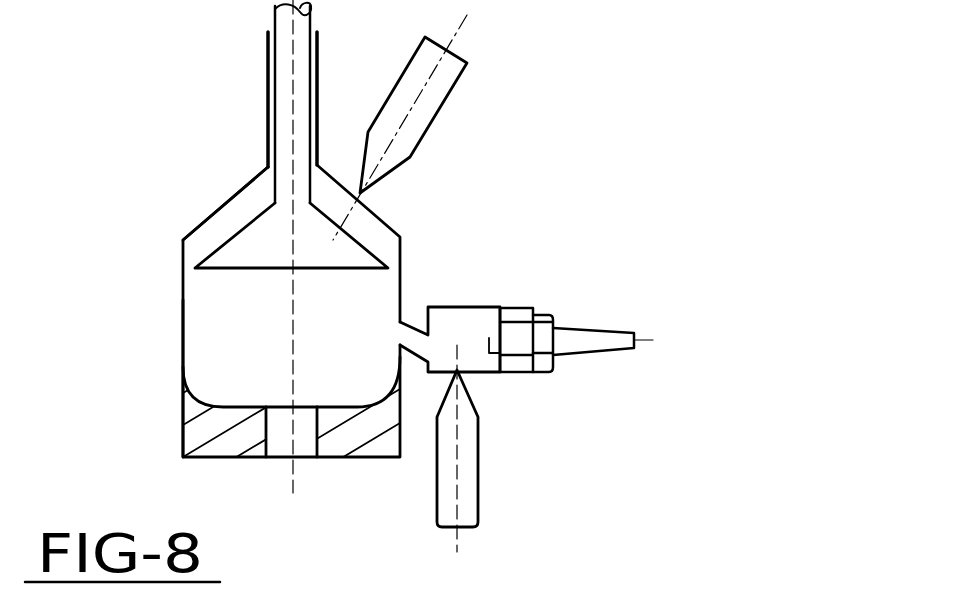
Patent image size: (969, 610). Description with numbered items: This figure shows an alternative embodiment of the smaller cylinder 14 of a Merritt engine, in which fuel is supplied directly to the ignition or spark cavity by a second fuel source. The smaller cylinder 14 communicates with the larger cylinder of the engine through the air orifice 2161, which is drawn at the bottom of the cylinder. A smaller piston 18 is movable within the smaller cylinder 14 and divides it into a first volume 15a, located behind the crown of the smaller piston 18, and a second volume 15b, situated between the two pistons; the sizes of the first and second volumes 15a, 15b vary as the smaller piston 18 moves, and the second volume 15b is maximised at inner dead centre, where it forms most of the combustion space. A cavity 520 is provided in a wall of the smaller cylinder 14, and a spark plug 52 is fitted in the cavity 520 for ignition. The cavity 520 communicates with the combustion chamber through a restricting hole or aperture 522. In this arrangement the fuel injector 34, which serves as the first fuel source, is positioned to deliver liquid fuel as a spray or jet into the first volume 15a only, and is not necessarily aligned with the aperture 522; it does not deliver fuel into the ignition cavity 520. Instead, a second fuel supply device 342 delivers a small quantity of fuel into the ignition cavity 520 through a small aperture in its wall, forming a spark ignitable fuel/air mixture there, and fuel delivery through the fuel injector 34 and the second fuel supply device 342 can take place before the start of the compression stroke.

The smaller cylinder 14 is at (213, 303).
The first volume 15a is at (225, 222).
The second volume 15b is at (208, 350).
The smaller piston 18 is at (237, 255).
The air orifice 2161 is at (303, 443).
The fuel injector 34 is at (433, 90).
The second fuel supply device 342 is at (462, 493).
The spark plug 52 is at (577, 343).
The cavity 520 is at (488, 320).
The aperture 522 is at (408, 325).